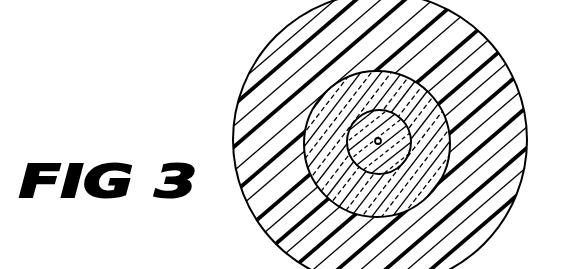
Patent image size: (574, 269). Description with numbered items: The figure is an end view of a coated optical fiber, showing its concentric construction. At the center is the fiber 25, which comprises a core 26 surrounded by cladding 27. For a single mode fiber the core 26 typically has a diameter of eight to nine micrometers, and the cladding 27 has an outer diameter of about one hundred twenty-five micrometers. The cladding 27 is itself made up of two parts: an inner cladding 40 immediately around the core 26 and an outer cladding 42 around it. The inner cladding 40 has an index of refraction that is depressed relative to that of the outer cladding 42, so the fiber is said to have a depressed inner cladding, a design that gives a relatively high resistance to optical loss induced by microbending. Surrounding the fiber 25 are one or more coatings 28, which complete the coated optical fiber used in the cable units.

The coatings 28 is at (452, 14).
The cladding 27 is at (403, 73).
The outer cladding 42 is at (428, 94).
The fiber 25 is at (318, 92).
The inner cladding 40 is at (408, 135).
The core 26 is at (378, 145).